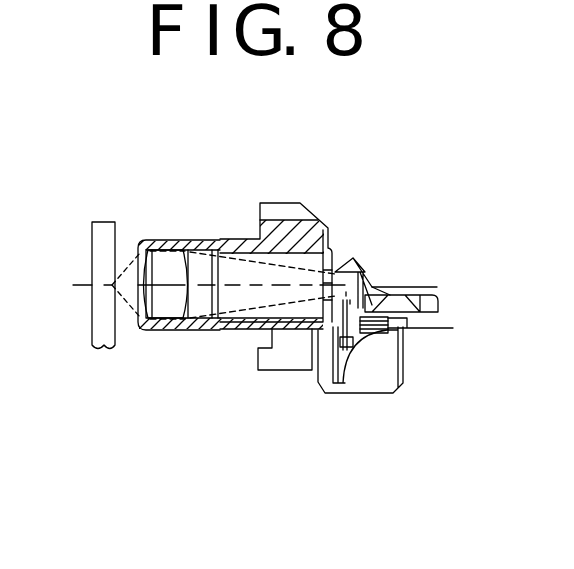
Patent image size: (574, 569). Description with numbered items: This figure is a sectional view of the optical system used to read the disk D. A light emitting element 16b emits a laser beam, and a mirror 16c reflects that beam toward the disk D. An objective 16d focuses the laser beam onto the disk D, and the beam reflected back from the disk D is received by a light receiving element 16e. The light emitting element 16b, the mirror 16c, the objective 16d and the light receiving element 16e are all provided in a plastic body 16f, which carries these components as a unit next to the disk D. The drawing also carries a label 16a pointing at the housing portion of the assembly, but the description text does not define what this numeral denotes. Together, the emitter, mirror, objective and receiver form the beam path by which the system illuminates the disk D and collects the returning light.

The disk D is at (103, 323).
The optical head body 16a is at (347, 212).
The light emitting element 16b is at (370, 397).
The mirror 16c is at (356, 261).
The objective 16d is at (165, 300).
The light receiving element 16e is at (412, 331).
The plastic body 16f is at (228, 238).